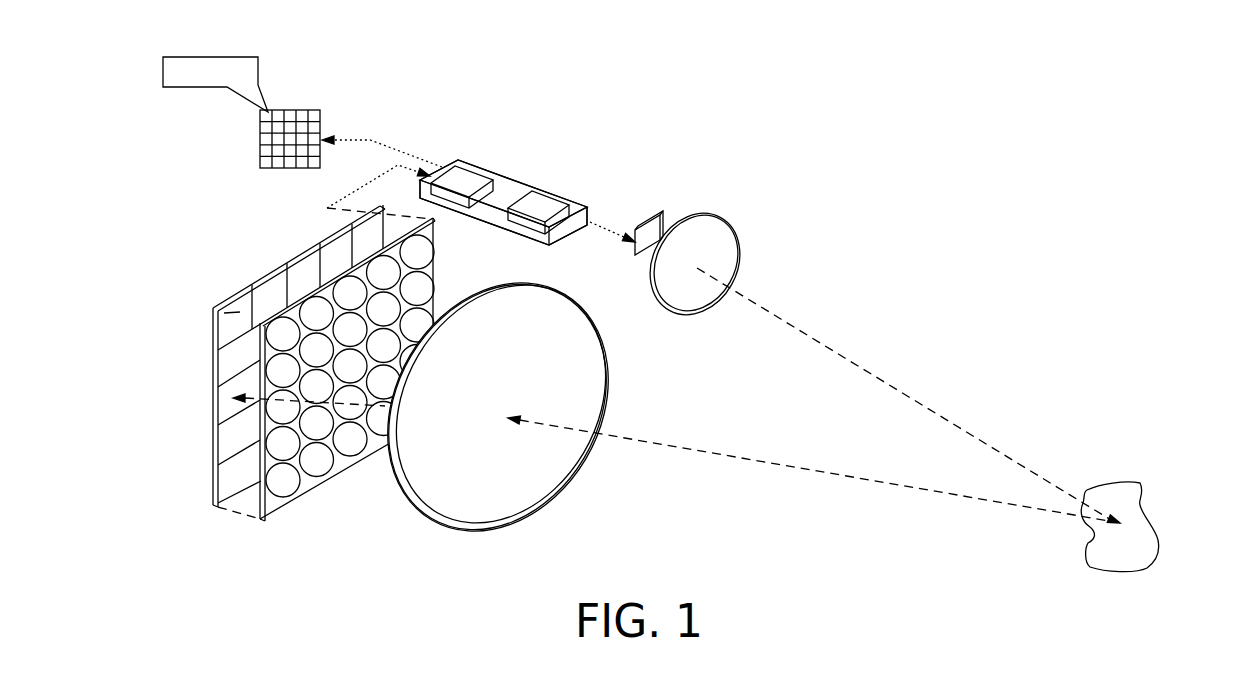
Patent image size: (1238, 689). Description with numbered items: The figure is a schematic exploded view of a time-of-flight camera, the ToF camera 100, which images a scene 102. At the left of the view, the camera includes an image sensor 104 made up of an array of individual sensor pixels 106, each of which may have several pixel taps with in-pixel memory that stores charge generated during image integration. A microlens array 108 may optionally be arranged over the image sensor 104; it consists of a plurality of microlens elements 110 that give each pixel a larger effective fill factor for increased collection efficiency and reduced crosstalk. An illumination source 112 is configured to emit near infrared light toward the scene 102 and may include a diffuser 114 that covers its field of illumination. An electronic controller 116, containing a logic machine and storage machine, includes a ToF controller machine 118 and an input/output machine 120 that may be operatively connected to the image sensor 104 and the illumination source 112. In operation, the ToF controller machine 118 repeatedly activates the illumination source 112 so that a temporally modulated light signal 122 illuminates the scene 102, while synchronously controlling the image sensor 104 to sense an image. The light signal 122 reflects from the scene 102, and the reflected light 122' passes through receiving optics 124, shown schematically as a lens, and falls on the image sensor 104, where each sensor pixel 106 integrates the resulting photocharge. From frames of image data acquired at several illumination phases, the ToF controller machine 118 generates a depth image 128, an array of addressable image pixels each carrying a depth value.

The ToF camera 100 is at (1055, 109).
The scene 102 is at (1125, 482).
The image sensor 104 is at (240, 295).
The sensor pixel 106 is at (228, 363).
The microlens array 108 is at (276, 518).
The microlens element 110 is at (274, 456).
The illumination source 112 is at (642, 255).
The diffuser 114 is at (738, 241).
The electronic controller 116 is at (568, 238).
The ToF controller machine 118 is at (520, 220).
The input/output machine 120 is at (480, 172).
The light signal 122 is at (908, 395).
The reflected light 122' is at (811, 469).
The receiving optics 124 is at (505, 537).
The depth image 128 is at (292, 110).